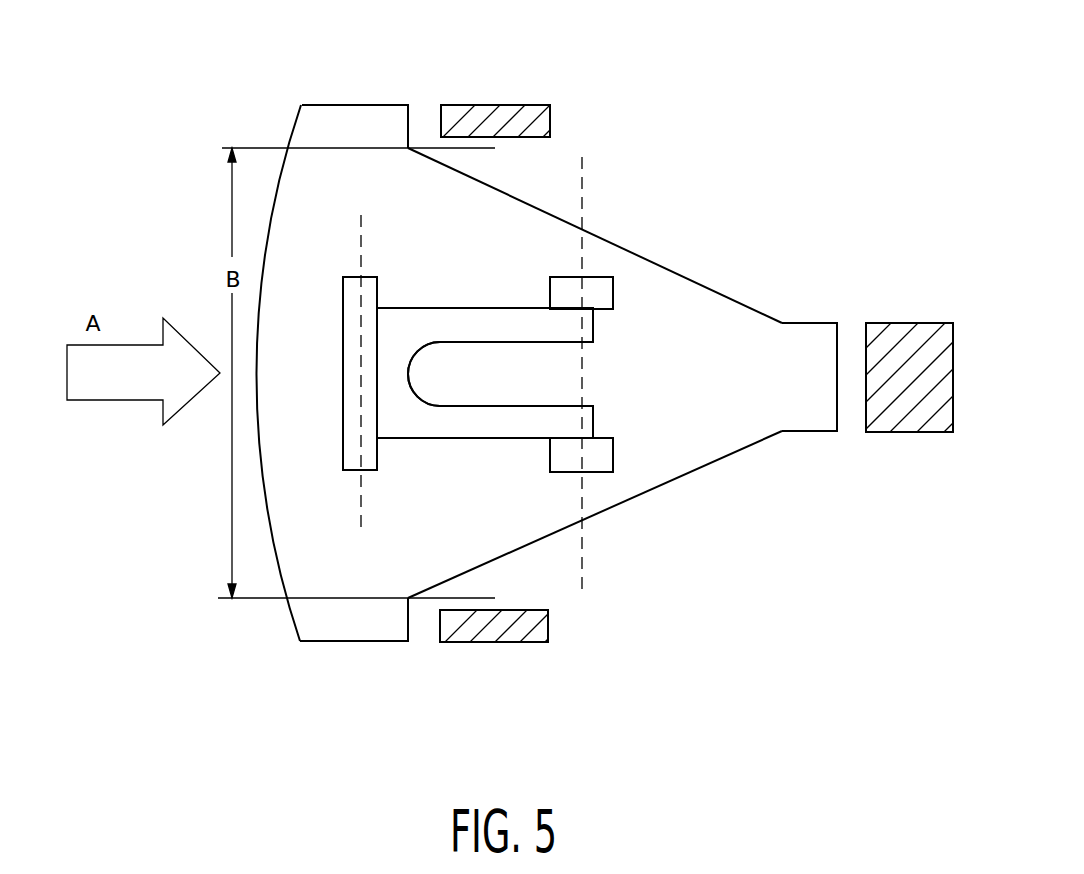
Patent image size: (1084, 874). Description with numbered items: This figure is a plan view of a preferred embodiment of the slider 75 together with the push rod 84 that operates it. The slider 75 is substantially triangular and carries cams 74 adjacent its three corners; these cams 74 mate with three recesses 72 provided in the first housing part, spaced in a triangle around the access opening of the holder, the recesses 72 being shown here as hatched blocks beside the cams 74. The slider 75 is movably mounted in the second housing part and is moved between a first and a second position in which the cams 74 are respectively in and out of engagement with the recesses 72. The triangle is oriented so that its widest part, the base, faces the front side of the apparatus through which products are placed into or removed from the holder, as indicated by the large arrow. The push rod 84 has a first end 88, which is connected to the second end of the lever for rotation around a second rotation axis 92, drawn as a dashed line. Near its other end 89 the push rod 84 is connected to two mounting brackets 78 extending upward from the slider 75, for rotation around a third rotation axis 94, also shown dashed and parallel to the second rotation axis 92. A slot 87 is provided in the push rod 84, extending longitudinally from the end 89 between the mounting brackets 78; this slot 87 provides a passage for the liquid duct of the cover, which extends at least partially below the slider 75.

The recesses 72 is at (508, 93).
The cams 74 is at (362, 115).
The slider 75 is at (698, 445).
The mounting brackets 78 is at (602, 287).
The push rod 84 is at (458, 323).
The slot 87 is at (559, 376).
The first end of the push rod 88 is at (342, 374).
The other end of the push rod 89 is at (609, 330).
The second rotation axis 92 is at (359, 222).
The third rotation axis 94 is at (584, 158).